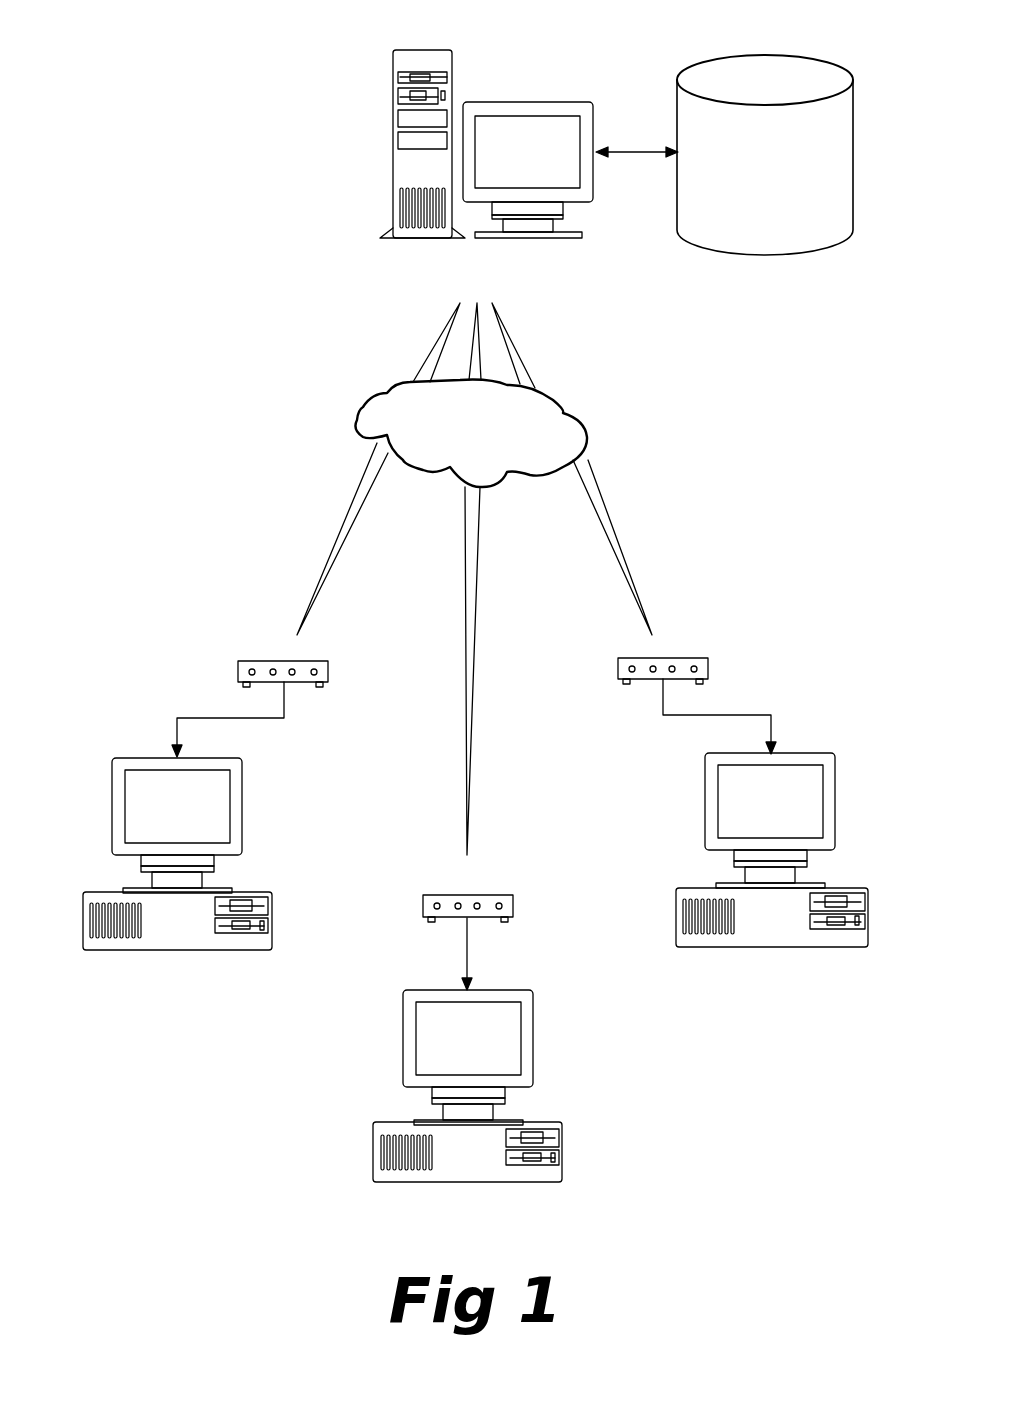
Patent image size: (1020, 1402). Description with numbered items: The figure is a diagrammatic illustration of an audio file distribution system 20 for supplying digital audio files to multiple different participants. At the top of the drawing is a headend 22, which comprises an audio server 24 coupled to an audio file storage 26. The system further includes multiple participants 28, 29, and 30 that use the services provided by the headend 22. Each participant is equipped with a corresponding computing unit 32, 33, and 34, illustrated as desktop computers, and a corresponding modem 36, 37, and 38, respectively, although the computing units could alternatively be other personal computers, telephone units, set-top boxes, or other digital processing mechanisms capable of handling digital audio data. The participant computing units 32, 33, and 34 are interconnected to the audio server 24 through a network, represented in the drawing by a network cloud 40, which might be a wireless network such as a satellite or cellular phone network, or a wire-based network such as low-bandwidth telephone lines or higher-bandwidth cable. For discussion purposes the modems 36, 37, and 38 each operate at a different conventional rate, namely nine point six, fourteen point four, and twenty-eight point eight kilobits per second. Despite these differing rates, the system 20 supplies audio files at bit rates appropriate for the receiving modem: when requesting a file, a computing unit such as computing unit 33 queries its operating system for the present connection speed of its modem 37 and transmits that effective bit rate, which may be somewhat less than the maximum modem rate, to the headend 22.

The audio file distribution system 20 is at (238, 231).
The headend 22 is at (701, 324).
The audio server 24 is at (528, 102).
The audio file storage 26 is at (777, 72).
The participant 28 is at (175, 999).
The participant 29 is at (390, 1224).
The participant 30 is at (781, 994).
The computing unit 32 is at (275, 940).
The computing unit 33 is at (566, 1165).
The computing unit 34 is at (674, 933).
The modem 36 is at (263, 660).
The modem 37 is at (448, 895).
The modem 38 is at (680, 658).
The network cloud 40 is at (560, 418).